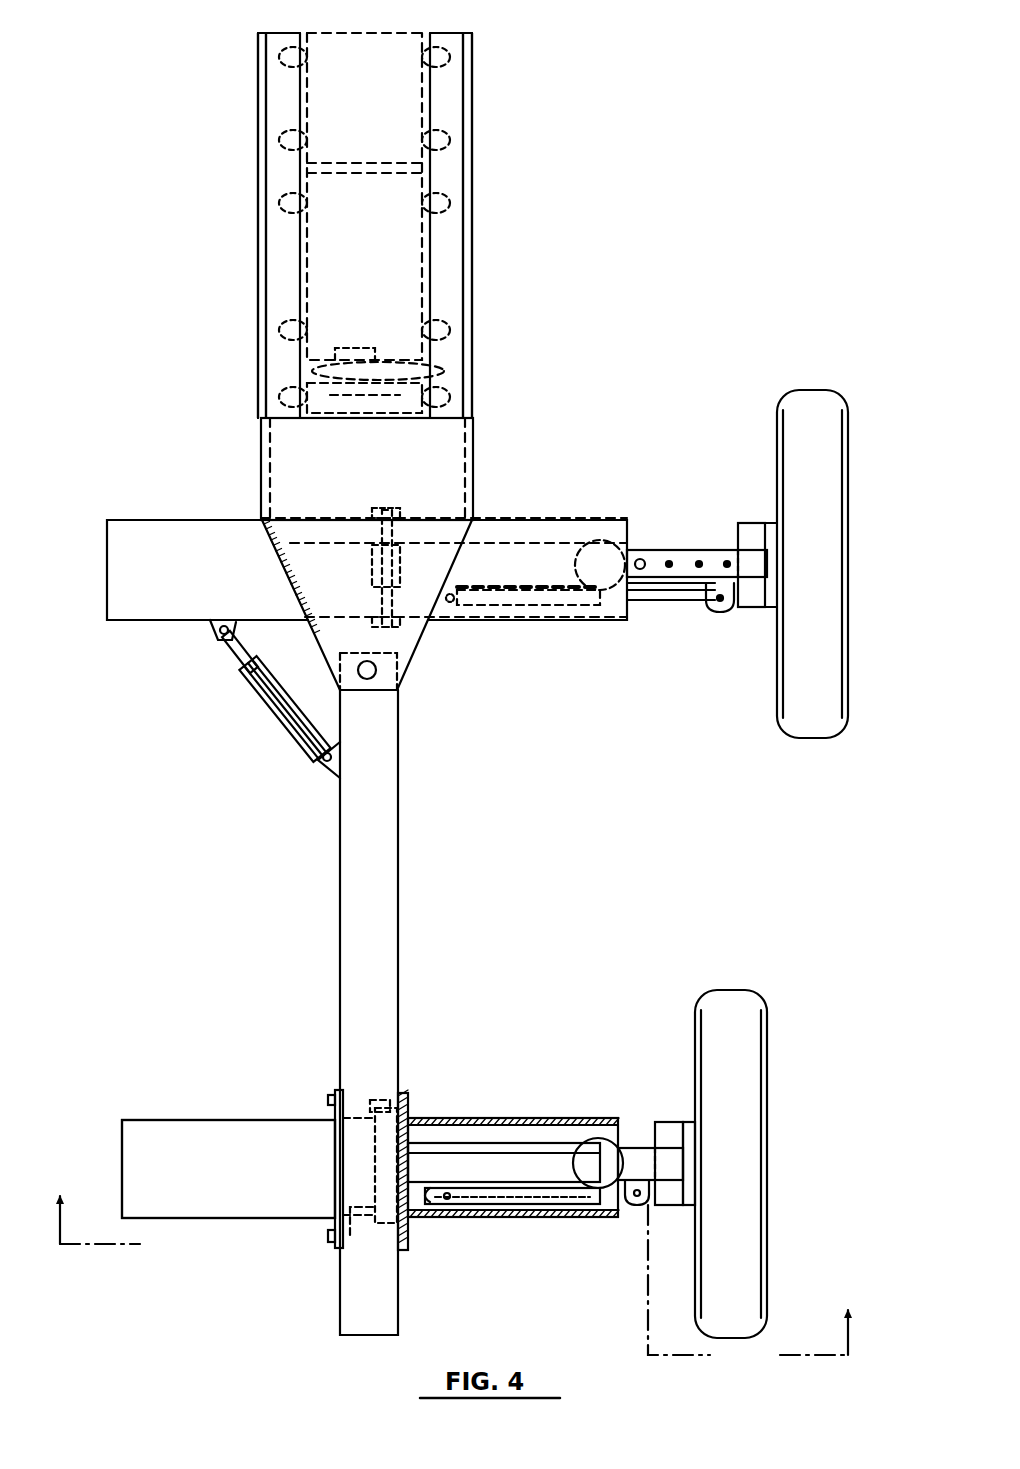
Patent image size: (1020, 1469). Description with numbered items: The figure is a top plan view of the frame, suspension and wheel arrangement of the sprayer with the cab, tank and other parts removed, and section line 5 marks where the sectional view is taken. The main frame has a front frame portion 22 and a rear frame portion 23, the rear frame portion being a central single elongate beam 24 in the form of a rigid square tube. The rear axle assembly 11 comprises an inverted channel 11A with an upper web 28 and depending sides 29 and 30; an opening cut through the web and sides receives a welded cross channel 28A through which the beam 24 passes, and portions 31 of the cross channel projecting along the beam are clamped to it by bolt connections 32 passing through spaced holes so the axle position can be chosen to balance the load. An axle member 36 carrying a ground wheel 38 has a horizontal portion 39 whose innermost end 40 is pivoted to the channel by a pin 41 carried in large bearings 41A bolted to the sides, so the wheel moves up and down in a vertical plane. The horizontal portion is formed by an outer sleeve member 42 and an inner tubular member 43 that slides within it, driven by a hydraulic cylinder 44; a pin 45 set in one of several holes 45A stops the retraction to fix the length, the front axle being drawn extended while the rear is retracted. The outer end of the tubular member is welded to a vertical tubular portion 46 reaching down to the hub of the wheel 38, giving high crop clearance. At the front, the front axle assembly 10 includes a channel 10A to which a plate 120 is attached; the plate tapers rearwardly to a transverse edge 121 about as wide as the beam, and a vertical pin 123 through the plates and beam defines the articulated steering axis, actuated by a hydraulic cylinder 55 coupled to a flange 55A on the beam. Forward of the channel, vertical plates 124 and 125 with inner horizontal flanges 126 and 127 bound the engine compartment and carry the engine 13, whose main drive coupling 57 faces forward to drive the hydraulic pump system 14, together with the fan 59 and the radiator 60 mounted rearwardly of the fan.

The section line 5 is at (452, 1260).
The front axle assembly 10 is at (580, 493).
The channel 10A is at (150, 520).
The rear axle assembly 11 is at (497, 1085).
The inverted channel 11A is at (230, 1118).
The engine 13 is at (385, 278).
The hydraulic pump system 14 is at (325, 97).
The front frame portion 22 is at (530, 455).
The rear frame portion 23 is at (489, 1001).
The elongate beam 24 is at (392, 908).
The upper web 28 is at (500, 520).
The cross channel 28A is at (406, 1099).
The depending side 29 is at (602, 1150).
The depending side 30 is at (497, 1218).
The projecting portions 31 is at (338, 1252).
The bolt connections 32 is at (333, 1228).
The axle member 36 is at (562, 1138).
The ground wheel 38 is at (740, 1005).
The horizontal portion 39 is at (470, 1148).
The innermost end 40 is at (372, 575).
The pin 41 is at (382, 525).
The bearings 41A is at (395, 510).
The outer sleeve member 42 is at (517, 1150).
The inner tubular member 43 is at (647, 1160).
The hydraulic cylinder 44 is at (540, 1218).
The pin 45 is at (640, 560).
The holes 45A is at (698, 560).
The vertical tubular portion 46 is at (673, 1145).
The hydraulic cylinder 55 is at (265, 716).
The flange 55A is at (323, 762).
The main drive coupling 57 is at (375, 165).
The fan 59 is at (470, 359).
The radiator 60 is at (375, 402).
The plate 120 is at (295, 442).
The transverse edge 121 is at (377, 698).
The pin 123 is at (395, 683).
The vertical plate 124 is at (263, 260).
The vertical plate 125 is at (467, 238).
The horizontal flange 126 is at (285, 237).
The horizontal flange 127 is at (462, 163).